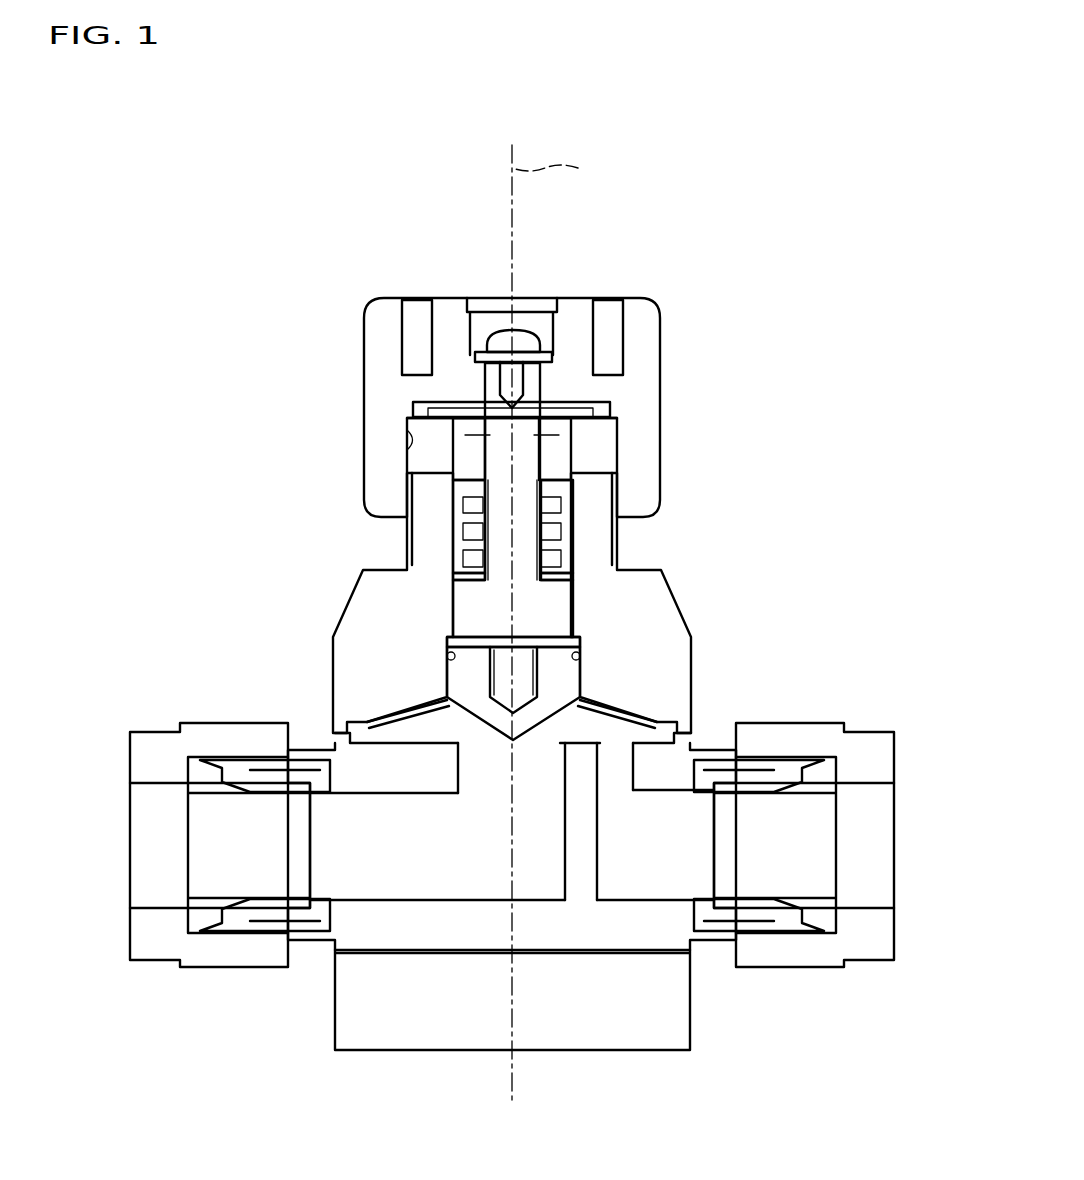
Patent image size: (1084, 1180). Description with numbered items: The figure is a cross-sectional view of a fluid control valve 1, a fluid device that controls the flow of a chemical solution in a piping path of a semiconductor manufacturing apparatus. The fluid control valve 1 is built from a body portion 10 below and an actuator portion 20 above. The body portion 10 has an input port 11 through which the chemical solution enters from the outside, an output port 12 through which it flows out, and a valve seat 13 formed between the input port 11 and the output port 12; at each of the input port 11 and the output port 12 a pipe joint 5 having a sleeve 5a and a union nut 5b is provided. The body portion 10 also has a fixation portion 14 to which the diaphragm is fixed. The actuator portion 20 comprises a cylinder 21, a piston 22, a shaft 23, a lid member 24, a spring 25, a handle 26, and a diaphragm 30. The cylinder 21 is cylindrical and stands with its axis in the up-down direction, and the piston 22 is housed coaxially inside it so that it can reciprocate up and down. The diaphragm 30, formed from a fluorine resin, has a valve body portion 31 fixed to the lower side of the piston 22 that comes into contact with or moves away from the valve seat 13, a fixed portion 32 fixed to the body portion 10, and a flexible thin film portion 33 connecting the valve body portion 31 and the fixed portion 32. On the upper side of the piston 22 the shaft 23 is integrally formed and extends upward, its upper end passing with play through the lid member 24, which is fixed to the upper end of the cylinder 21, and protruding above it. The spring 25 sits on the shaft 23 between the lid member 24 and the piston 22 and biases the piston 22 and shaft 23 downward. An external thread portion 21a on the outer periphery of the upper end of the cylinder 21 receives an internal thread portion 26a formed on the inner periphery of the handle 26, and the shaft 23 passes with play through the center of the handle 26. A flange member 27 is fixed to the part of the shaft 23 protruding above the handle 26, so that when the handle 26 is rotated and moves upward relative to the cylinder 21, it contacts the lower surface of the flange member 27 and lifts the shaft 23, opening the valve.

The fluid control valve 1 is at (511, 625).
The pipe joint 5 is at (512, 889).
The sleeve 5a is at (205, 795).
The union nut 5b is at (148, 962).
The body portion 10 is at (512, 889).
The input port 11 is at (342, 892).
The output port 12 is at (662, 890).
The valve seat 13 is at (455, 770).
The fixation portion 14 is at (642, 770).
The actuator portion 20 is at (502, 495).
The cylinder 21 is at (350, 648).
The external thread portion 21a is at (407, 532).
The piston 22 is at (555, 608).
The shaft 23 is at (527, 558).
The lid member 24 is at (570, 462).
The spring 25 is at (560, 522).
The handle 26 is at (385, 357).
The internal thread portion 26a is at (410, 440).
The flange member 27 is at (550, 345).
The diaphragm 30 is at (526, 688).
The valve body portion 31 is at (565, 676).
The fixed portion 32 is at (660, 715).
The thin film portion 33 is at (573, 728).